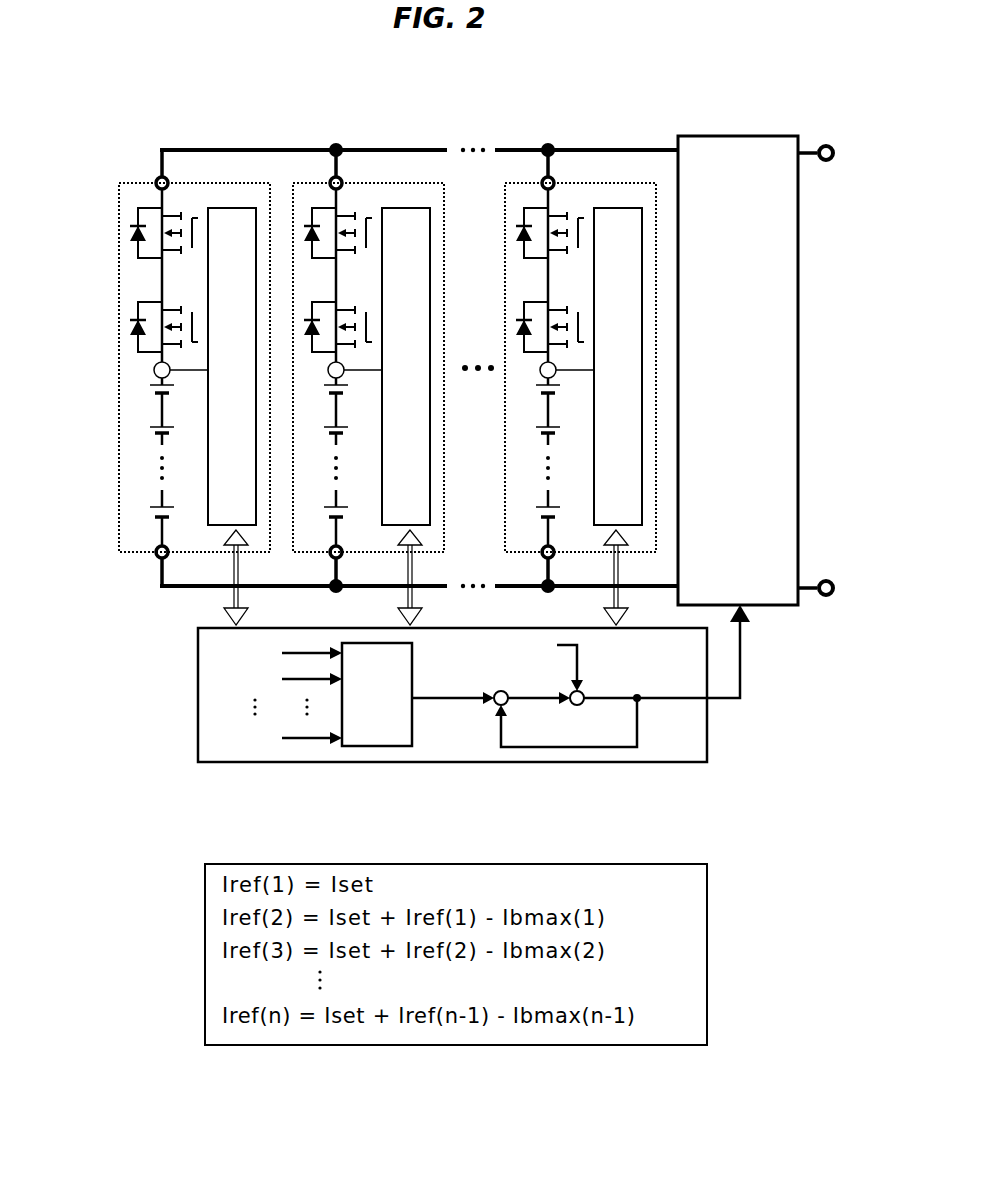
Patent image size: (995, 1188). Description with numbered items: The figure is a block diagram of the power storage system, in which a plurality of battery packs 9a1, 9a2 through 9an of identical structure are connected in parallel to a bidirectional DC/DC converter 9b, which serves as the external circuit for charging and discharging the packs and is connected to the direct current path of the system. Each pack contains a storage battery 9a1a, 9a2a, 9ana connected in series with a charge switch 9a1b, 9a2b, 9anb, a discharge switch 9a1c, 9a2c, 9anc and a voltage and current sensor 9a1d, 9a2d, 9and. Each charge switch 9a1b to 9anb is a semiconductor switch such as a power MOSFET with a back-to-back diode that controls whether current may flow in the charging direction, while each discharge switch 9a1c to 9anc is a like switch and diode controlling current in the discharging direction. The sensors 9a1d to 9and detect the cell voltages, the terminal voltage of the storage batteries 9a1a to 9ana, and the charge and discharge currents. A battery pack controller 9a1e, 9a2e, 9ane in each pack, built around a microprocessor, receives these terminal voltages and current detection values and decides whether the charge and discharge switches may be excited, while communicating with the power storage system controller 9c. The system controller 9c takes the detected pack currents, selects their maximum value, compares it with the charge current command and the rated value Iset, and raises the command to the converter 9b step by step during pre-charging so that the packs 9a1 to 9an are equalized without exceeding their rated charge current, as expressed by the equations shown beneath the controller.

The battery pack 9a1 is at (176, 356).
The storage battery 9a1a is at (145, 433).
The charge switch 9a1b is at (128, 232).
The discharge switch 9a1c is at (125, 328).
The voltage and current sensor 9a1d is at (152, 372).
The battery pack controller 9a1e is at (228, 207).
The battery pack 9a2 is at (399, 355).
The storage battery 9a2a is at (412, 465).
The charge switch 9a2b is at (404, 266).
The discharge switch 9a2c is at (404, 357).
The voltage and current sensor 9a2d is at (414, 417).
The battery pack controller 9a2e is at (437, 319).
The battery pack 9an is at (571, 359).
The storage battery 9ana is at (503, 465).
The charge switch 9anb is at (517, 215).
The discharge switch 9anc is at (518, 302).
The voltage and current sensor 9and is at (523, 351).
The battery pack controller 9ane is at (645, 316).
The bidirectional DC/DC converter 9b is at (725, 136).
The power storage system controller 9c is at (198, 697).